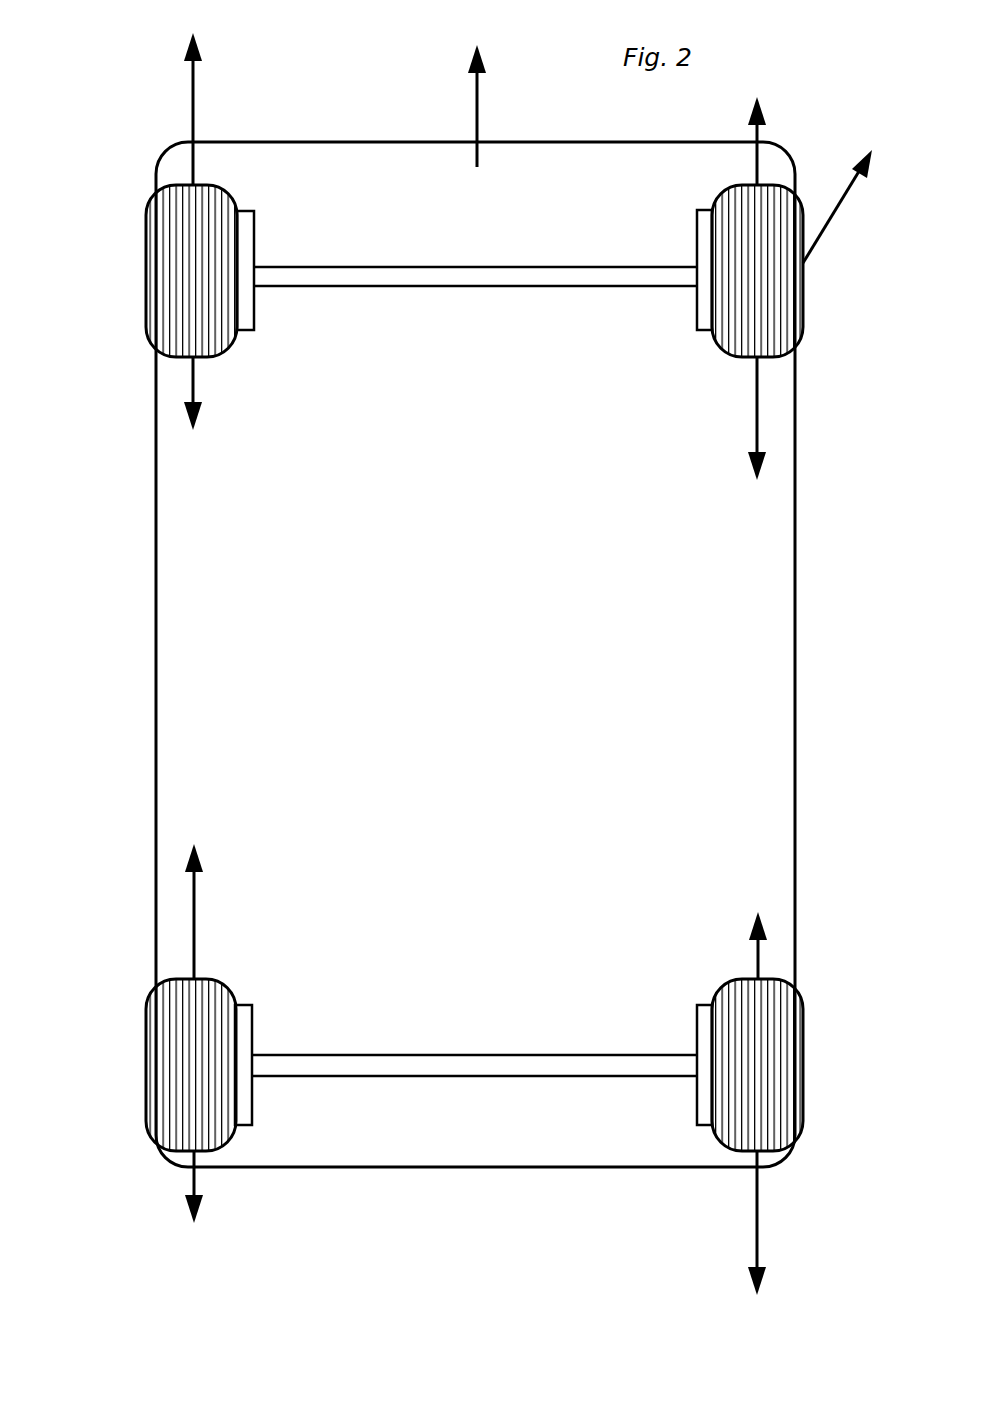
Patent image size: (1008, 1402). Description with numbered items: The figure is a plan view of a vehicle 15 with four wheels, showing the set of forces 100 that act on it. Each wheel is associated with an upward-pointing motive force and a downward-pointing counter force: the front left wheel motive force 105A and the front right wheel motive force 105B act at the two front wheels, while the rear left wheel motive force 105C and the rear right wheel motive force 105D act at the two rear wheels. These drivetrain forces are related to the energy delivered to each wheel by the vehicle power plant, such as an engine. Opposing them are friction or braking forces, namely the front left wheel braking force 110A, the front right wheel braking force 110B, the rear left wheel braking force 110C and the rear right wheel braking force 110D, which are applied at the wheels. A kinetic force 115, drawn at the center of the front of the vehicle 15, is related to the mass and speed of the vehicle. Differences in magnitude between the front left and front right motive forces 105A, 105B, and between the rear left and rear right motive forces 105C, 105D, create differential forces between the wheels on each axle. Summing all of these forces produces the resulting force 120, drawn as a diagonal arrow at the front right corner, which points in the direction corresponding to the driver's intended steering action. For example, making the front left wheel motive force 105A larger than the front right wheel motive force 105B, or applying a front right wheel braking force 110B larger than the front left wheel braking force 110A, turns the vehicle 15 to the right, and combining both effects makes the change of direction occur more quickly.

The set of forces 100 is at (424, 600).
The vehicle 15 is at (153, 643).
The front left wheel motive force 105A is at (195, 112).
The front right wheel motive force 105B is at (760, 137).
The rear left wheel motive force 105C is at (192, 892).
The rear right wheel motive force 105D is at (755, 961).
The front left wheel braking force 110A is at (192, 373).
The front right wheel braking force 110B is at (755, 442).
The rear left wheel braking force 110C is at (186, 1182).
The rear right wheel braking force 110D is at (758, 1240).
The kinetic force 115 is at (478, 113).
The resulting force 120 is at (833, 213).